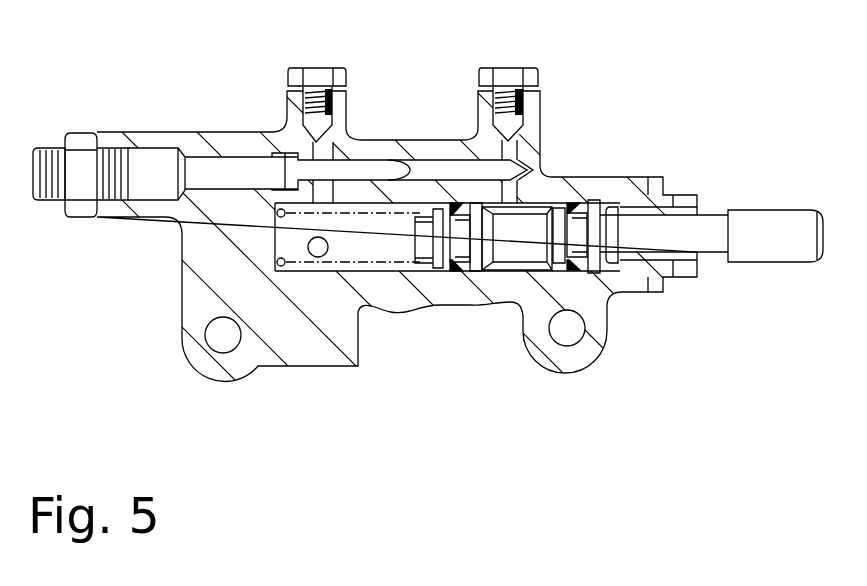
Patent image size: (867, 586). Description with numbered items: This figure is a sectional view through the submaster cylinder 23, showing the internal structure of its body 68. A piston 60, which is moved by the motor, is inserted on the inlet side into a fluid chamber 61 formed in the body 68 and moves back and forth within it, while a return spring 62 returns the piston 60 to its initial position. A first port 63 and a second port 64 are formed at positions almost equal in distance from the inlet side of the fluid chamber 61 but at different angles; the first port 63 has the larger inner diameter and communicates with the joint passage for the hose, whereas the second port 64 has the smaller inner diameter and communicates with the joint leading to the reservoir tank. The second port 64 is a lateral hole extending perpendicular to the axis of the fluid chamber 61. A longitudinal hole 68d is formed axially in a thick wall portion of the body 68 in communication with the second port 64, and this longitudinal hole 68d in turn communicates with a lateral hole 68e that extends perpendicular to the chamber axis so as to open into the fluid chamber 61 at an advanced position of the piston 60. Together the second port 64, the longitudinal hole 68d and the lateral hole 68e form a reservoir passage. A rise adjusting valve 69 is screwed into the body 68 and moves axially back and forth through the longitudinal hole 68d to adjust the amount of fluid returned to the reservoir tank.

The submaster cylinder 23 is at (179, 84).
The piston 60 is at (513, 247).
The fluid chamber 61 is at (389, 246).
The return spring 62 is at (392, 240).
The first port 63 is at (308, 247).
The second port 64 is at (342, 212).
The body 68 is at (190, 282).
The longitudinal hole 68d is at (403, 172).
The lateral hole 68e is at (540, 177).
The rise adjusting valve 69 is at (150, 157).